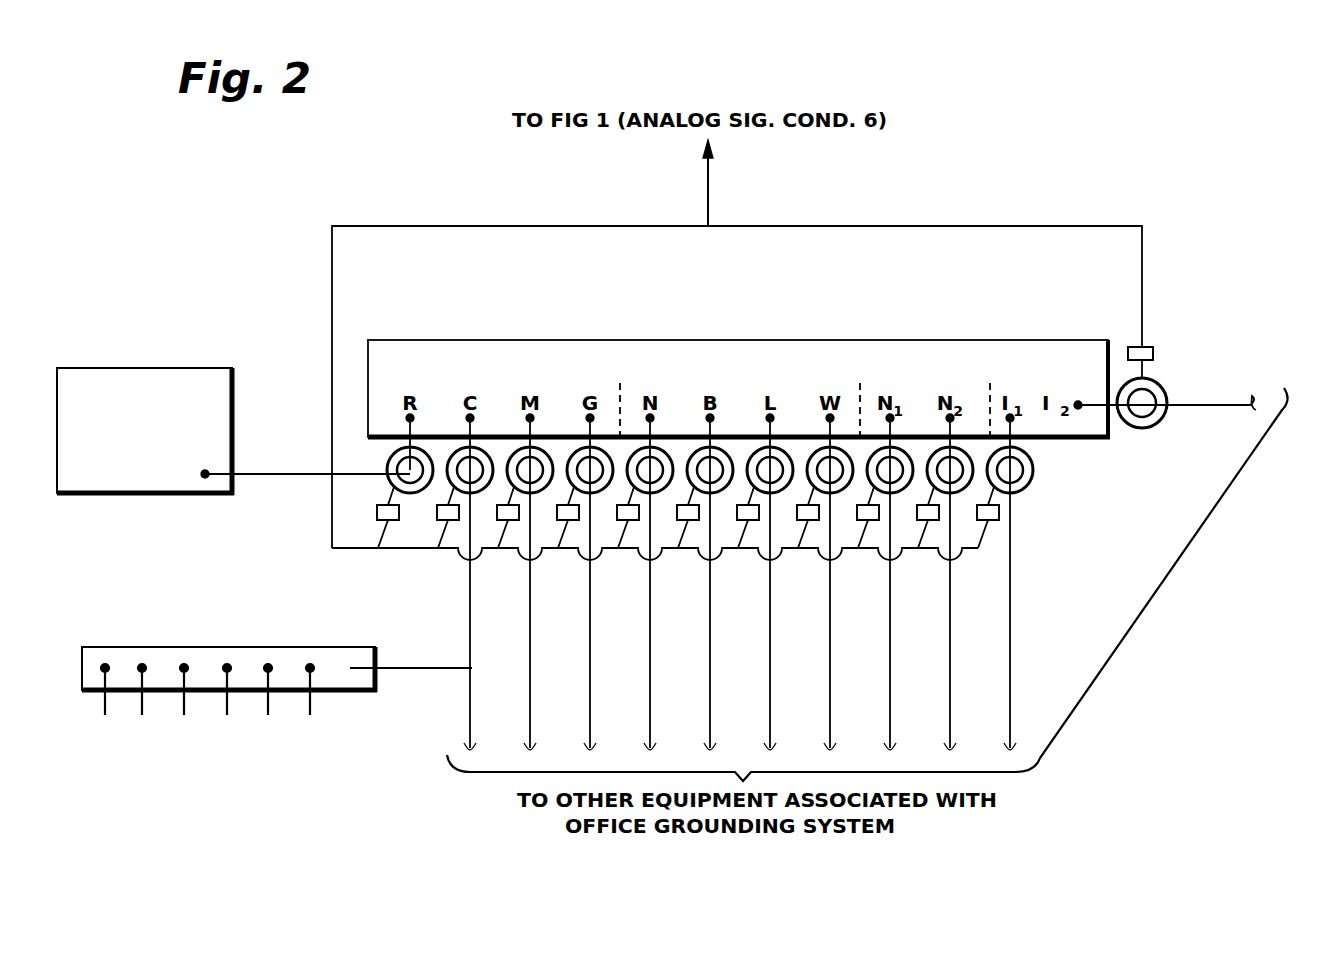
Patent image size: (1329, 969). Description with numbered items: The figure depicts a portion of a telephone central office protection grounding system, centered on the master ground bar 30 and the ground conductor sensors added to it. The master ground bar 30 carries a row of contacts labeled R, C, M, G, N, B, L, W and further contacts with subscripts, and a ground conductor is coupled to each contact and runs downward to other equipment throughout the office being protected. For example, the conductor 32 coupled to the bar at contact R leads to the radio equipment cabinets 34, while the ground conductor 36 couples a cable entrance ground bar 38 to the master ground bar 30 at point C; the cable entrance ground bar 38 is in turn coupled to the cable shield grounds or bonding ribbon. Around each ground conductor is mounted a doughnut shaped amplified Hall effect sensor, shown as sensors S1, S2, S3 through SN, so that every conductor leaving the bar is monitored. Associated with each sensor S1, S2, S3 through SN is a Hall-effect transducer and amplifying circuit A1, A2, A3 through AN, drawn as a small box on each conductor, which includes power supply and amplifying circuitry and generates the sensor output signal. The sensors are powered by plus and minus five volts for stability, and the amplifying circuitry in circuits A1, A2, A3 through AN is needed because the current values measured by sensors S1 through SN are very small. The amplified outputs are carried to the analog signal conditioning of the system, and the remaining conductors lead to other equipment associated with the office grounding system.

The master ground bar 30 is at (1001, 340).
The conductor 32 is at (300, 473).
The radio equipment cabinets 34 is at (234, 410).
The ground conductor 36 is at (398, 669).
The cable entrance ground bar 38 is at (345, 691).
The Hall effect sensor S1 is at (390, 467).
The Hall effect sensor S2 is at (456, 450).
The Hall effect sensor S3 is at (516, 450).
The Hall effect sensor SN is at (1161, 392).
The Hall-effect transducer and amplifying circuit A1 is at (376, 513).
The Hall-effect transducer and amplifying circuit A2 is at (438, 508).
The Hall-effect transducer and amplifying circuit A3 is at (498, 507).
The Hall-effect transducer and amplifying circuit AN is at (1148, 347).